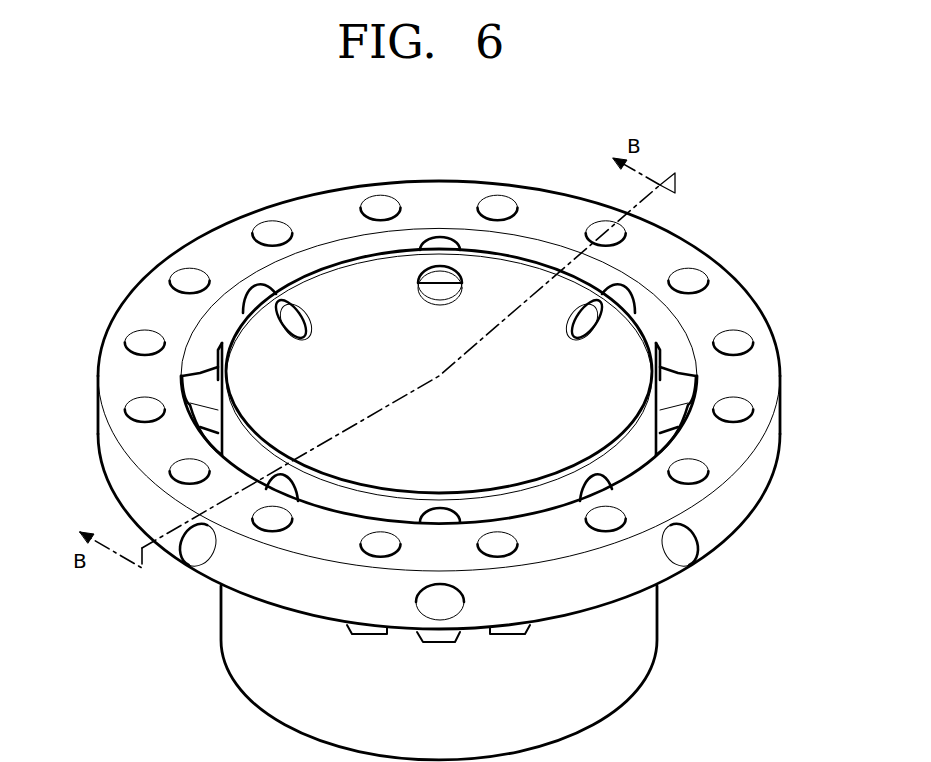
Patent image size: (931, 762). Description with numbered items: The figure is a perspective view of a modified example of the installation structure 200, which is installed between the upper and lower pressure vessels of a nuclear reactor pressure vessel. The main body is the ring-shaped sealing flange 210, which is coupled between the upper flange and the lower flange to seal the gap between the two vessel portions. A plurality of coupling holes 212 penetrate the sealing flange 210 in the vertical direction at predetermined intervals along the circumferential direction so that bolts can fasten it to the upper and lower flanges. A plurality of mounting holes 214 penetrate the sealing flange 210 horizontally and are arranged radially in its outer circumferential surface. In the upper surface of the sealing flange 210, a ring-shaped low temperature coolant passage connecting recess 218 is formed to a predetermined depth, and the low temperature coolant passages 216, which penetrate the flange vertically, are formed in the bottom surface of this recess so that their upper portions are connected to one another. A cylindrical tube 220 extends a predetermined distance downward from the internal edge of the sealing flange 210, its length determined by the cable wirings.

The installation structure 200 is at (190, 230).
The sealing flange 210 is at (315, 207).
The coupling holes 212 is at (382, 204).
The mounting holes 214 is at (679, 546).
The low temperature coolant passages 216 is at (217, 370).
The low temperature coolant passage connecting recess 218 is at (543, 257).
The cylindrical tube 220 is at (247, 667).